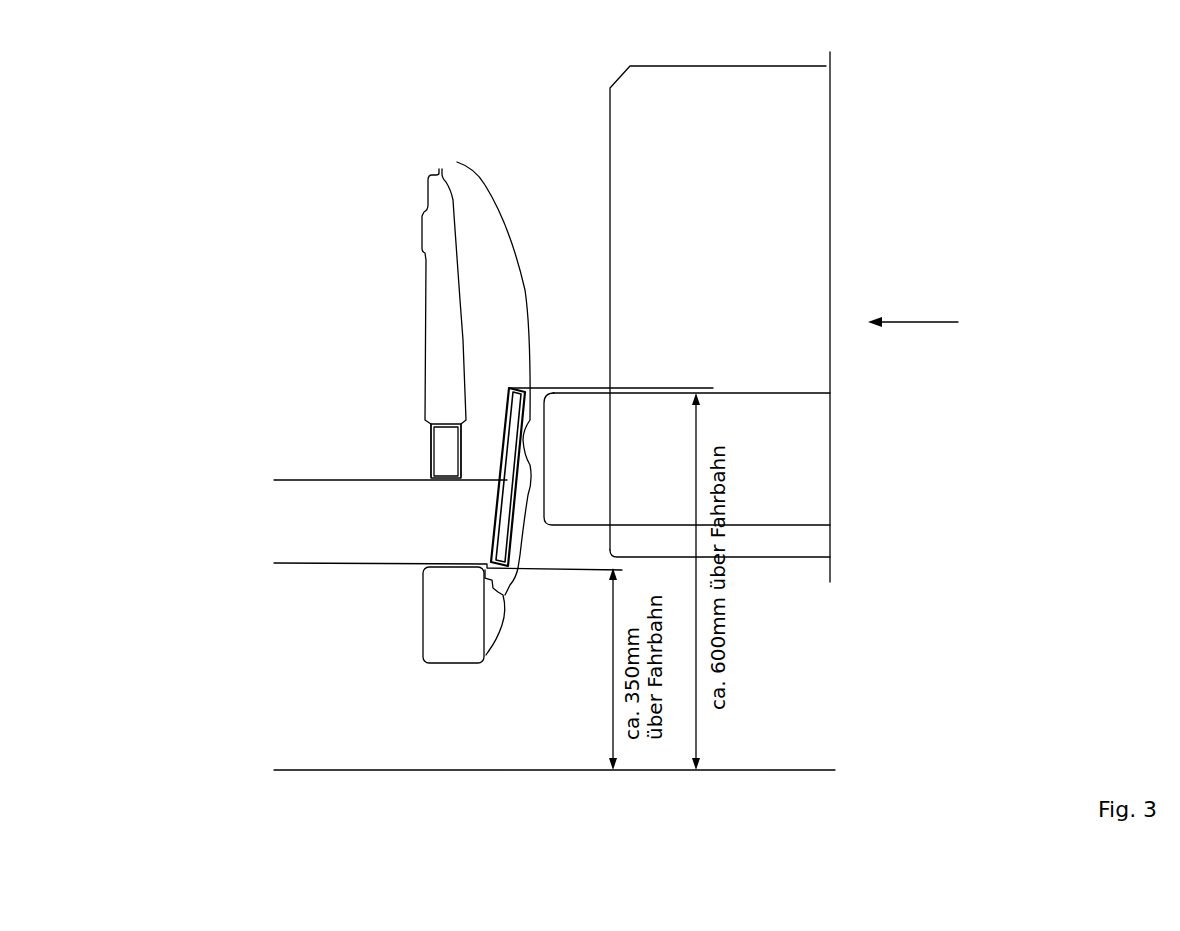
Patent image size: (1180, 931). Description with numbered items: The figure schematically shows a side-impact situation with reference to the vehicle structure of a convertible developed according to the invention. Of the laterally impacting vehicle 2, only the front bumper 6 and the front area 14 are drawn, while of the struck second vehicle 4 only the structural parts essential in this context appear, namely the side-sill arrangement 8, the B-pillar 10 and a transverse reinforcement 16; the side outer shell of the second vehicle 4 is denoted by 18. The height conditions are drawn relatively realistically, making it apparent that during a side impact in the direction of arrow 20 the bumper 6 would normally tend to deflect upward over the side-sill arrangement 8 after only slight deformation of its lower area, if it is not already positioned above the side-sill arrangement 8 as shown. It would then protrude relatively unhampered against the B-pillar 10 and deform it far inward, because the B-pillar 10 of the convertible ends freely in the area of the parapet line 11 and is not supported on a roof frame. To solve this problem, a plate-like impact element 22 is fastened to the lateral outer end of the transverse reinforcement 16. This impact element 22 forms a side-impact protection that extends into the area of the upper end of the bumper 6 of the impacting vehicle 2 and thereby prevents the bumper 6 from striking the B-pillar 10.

The laterally impacting vehicle 2 is at (901, 585).
The second vehicle 4 is at (212, 169).
The front bumper 6 is at (580, 440).
The side-sill arrangement 8 is at (462, 645).
The B-pillar 10 is at (436, 333).
The parapet line 11 is at (398, 156).
The front area 14 is at (687, 50).
The transverse reinforcement 16 is at (312, 547).
The side outer shell 18 is at (503, 198).
The arrow 20 is at (920, 321).
The plate-like impact element 22 is at (508, 437).